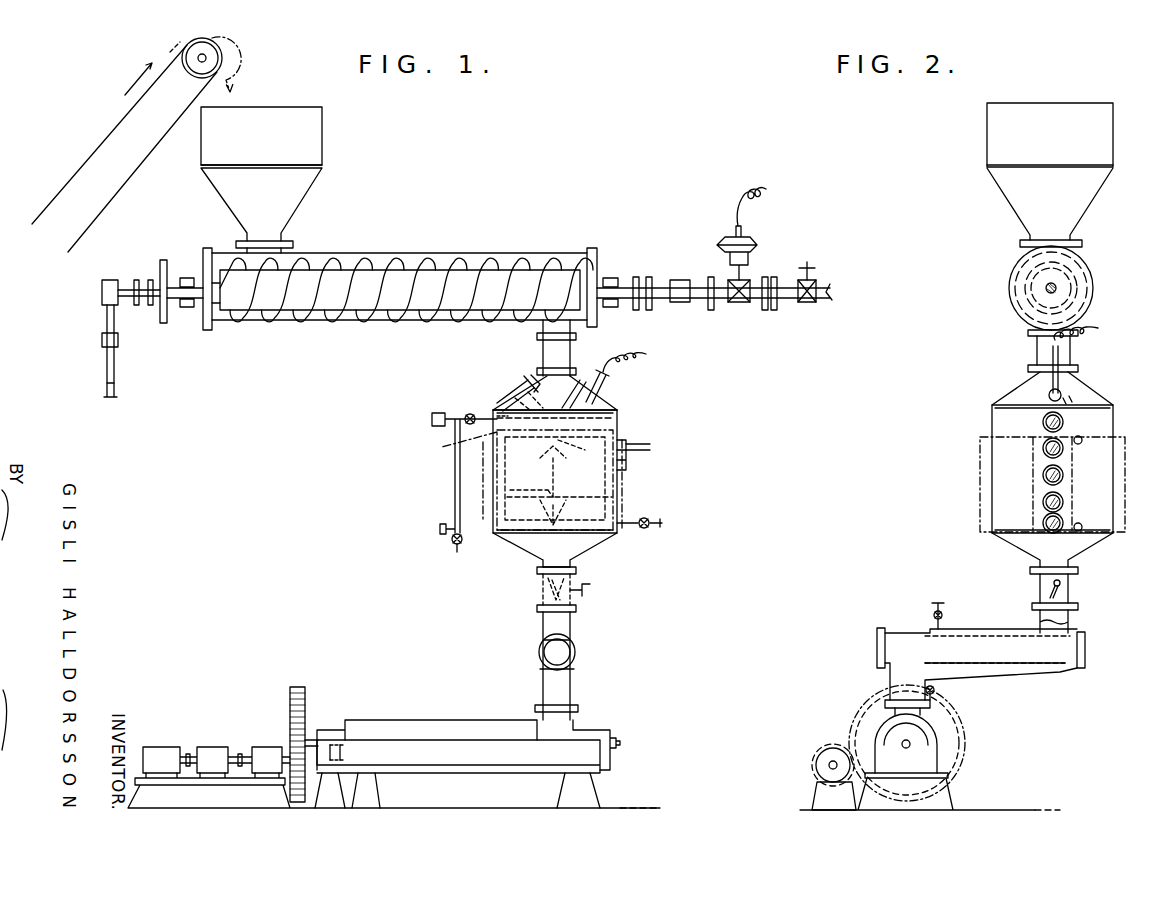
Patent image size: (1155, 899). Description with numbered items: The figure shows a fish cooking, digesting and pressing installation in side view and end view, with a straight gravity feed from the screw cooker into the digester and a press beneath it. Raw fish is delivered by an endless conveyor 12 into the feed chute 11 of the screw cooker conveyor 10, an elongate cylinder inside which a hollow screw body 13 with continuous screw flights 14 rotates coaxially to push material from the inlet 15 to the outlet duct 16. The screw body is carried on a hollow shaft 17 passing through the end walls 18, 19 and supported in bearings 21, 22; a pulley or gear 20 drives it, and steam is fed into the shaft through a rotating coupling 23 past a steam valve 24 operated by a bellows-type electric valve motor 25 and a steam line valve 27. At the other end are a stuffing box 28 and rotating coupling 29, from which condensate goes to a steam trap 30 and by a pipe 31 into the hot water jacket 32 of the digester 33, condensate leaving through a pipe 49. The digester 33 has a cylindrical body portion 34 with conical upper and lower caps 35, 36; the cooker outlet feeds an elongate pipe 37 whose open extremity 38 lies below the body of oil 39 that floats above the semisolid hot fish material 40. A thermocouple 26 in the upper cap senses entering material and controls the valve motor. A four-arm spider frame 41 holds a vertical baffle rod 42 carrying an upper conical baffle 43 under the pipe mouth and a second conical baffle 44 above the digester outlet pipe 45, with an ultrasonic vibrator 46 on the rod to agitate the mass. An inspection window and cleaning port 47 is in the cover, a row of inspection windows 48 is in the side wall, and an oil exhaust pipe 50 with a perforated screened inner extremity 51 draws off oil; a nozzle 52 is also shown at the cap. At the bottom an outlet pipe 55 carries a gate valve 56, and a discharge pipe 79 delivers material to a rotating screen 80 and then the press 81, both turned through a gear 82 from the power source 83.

In FIG. 1, the screw cooker conveyor 10 is at (400, 262).
In FIG. 2, the screw cooker conveyor 10 is at (1087, 262).
In FIG. 1, the feed chute 11 is at (318, 131).
In FIG. 2, the feed chute 11 is at (1054, 137).
In FIG. 1, the endless conveyor 12 is at (140, 163).
In FIG. 1, the hollow screw body 13 is at (428, 275).
In FIG. 1, the screw flights 14 is at (360, 262).
In FIG. 1, the inlet 15 is at (286, 253).
In FIG. 2, the inlet 15 is at (1018, 248).
In FIG. 1, the outlet duct 16 is at (545, 327).
In FIG. 1, the hollow shaft 17 is at (622, 286).
In FIG. 1, the end wall 18 is at (597, 257).
In FIG. 1, the end wall 19 is at (204, 257).
In FIG. 1, the pulley or gear 20 is at (162, 325).
In FIG. 1, the bearing 21 is at (610, 309).
In FIG. 1, the bearing 22 is at (187, 309).
In FIG. 1, the rotating coupling 23 is at (681, 305).
In FIG. 1, the steam valve 24 is at (739, 305).
In FIG. 1, the electric valve motor 25 is at (752, 256).
In FIG. 1, the digester thermocouple 26 is at (594, 382).
In FIG. 2, the digester thermocouple 26 is at (1066, 386).
In FIG. 1, the steam line valve 27 is at (807, 305).
In FIG. 1, the stuffing box 28 is at (137, 279).
In FIG. 1, the rotating coupling 29 is at (106, 279).
In FIG. 1, the steam trap 30 is at (102, 340).
In FIG. 1, the pipe 31 is at (106, 383).
In FIG. 2, the pipe 31 is at (1082, 526).
In FIG. 1, the jacket 32 is at (622, 492).
In FIG. 2, the jacket 32 is at (1126, 488).
In FIG. 1, the digester 33 is at (618, 427).
In FIG. 2, the digester 33 is at (1108, 420).
In FIG. 1, the cylindrical body portion 34 is at (544, 463).
In FIG. 1, the upper cap 35 is at (600, 394).
In FIG. 2, the upper cap 35 is at (1085, 393).
In FIG. 1, the lower cap 36 is at (600, 544).
In FIG. 2, the lower cap 36 is at (1088, 545).
In FIG. 1, the elongate pipe 37 is at (620, 411).
In FIG. 1, the open extremity 38 is at (573, 448).
In FIG. 1, the body of oil 39 is at (455, 450).
In FIG. 1, the semisolid hot fish material 40 is at (512, 520).
In FIG. 1, the spider frame 41 is at (600, 497).
In FIG. 1, the baffle rod 42 is at (548, 474).
In FIG. 1, the conical baffle 43 is at (545, 454).
In FIG. 1, the second conical baffle 44 is at (541, 512).
In FIG. 1, the digester outlet pipe 45 is at (578, 569).
In FIG. 1, the ultrasonic vibrator 46 is at (546, 492).
In FIG. 1, the inspection window and cleaning port 47 is at (510, 388).
In FIG. 1, the inspection windows 48 is at (627, 463).
In FIG. 2, the inspection windows 48 is at (1060, 470).
In FIG. 1, the pipe 49 is at (650, 447).
In FIG. 2, the pipe 49 is at (1083, 440).
In FIG. 1, the oil exhaust pipe 50 is at (454, 477).
In FIG. 1, the perforated screened inner extremity 51 is at (496, 410).
In FIG. 1, the nozzle 52 is at (528, 412).
In FIG. 1, the outlet pipe 55 is at (537, 566).
In FIG. 1, the gate valve 56 is at (578, 605).
In FIG. 2, the gate valve 56 is at (1048, 590).
In FIG. 1, the discharge pipe 79 is at (540, 622).
In FIG. 2, the discharge pipe 79 is at (1072, 616).
In FIG. 1, the rotating screen 80 is at (402, 720).
In FIG. 2, the rotating screen 80 is at (880, 728).
In FIG. 1, the press 81 is at (457, 774).
In FIG. 2, the press 81 is at (828, 765).
In FIG. 1, the gear 82 is at (306, 690).
In FIG. 2, the gear 82 is at (872, 700).
In FIG. 1, the power source 83 is at (167, 752).
In FIG. 2, the power source 83 is at (822, 756).